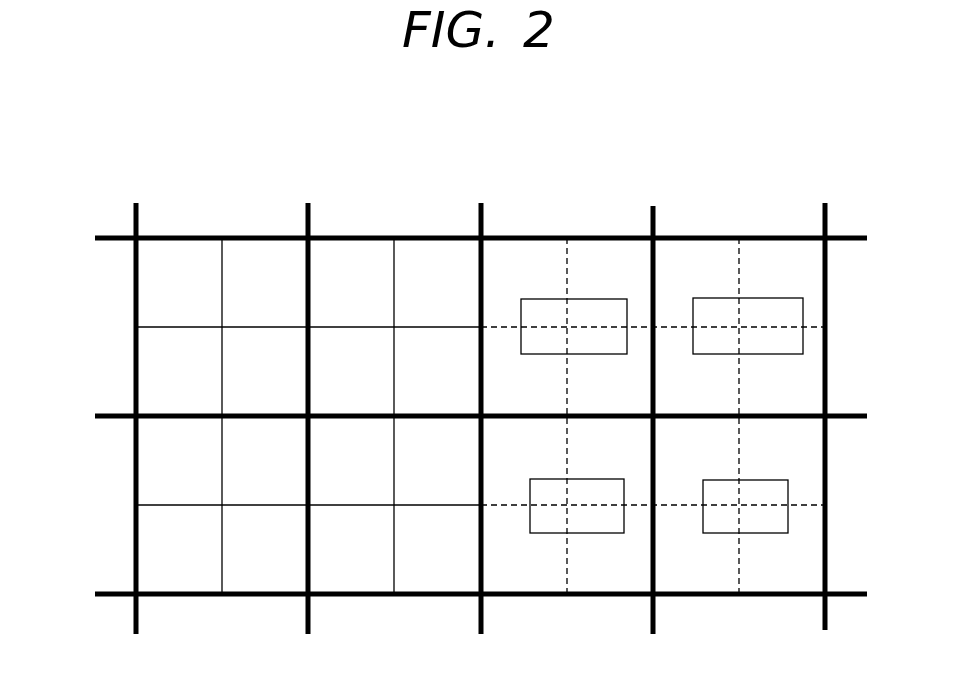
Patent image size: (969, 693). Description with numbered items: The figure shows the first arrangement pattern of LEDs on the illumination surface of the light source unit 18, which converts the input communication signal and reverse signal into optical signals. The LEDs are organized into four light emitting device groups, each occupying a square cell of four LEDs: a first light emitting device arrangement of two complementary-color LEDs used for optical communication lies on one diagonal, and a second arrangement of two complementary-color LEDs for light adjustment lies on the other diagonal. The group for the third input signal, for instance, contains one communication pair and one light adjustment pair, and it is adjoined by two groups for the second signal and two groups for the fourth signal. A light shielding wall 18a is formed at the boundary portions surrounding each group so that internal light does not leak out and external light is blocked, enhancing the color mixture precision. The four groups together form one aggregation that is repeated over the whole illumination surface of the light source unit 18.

The light source unit 18 is at (244, 157).
The light shielding wall 18a is at (481, 216).